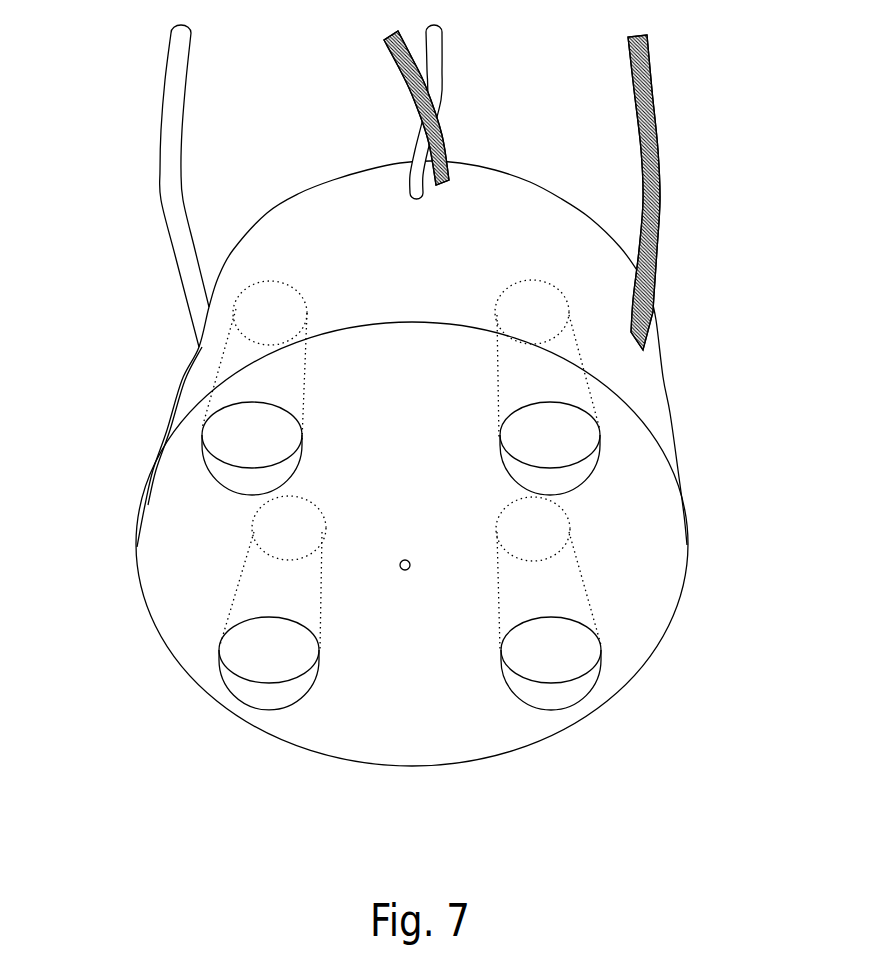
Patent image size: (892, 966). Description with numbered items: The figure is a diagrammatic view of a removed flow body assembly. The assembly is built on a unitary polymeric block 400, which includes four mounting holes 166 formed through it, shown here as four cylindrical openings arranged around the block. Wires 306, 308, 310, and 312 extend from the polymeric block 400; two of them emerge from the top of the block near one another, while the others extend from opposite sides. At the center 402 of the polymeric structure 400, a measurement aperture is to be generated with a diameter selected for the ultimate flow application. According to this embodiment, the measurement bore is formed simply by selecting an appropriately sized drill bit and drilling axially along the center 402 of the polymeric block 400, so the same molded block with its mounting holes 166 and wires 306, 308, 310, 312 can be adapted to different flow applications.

The mounting holes 166 is at (226, 433).
The wire 306 is at (417, 74).
The wire 308 is at (442, 53).
The wire 310 is at (657, 93).
The wire 312 is at (168, 124).
The unitary polymeric block 400 is at (673, 437).
The center 402 is at (405, 571).